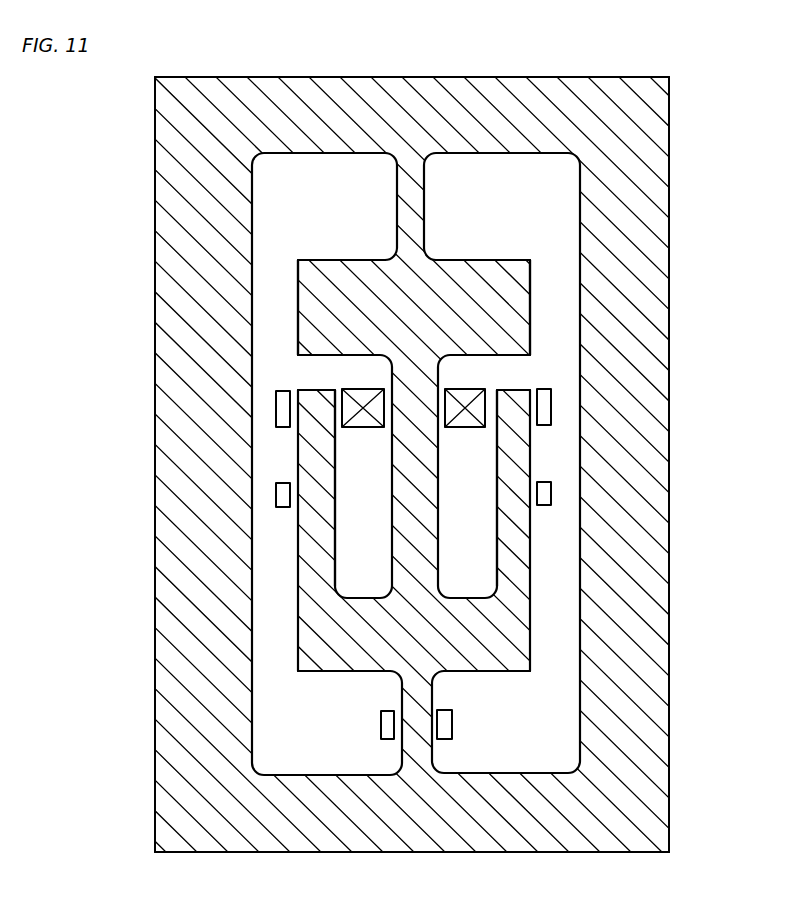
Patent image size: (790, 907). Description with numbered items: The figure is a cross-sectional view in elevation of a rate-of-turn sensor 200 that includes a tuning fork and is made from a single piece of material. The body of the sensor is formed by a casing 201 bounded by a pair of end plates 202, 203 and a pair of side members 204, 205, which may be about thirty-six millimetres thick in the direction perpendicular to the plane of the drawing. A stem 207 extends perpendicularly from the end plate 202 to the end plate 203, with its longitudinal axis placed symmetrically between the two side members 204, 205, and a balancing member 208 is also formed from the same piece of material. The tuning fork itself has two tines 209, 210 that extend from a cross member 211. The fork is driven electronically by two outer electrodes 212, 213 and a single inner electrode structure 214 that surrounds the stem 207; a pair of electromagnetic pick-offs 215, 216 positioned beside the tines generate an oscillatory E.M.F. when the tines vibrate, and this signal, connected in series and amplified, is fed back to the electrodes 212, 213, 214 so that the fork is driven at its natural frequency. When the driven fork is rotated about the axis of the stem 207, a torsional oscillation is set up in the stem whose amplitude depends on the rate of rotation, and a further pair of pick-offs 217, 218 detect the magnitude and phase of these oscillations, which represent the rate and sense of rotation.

The sensor 200 is at (702, 462).
The casing 201 is at (578, 813).
The end plate 202 is at (526, 90).
The end plate 203 is at (475, 840).
The side member 204 is at (655, 581).
The side member 205 is at (175, 587).
The stem 207 is at (423, 206).
The balancing member 208 is at (525, 277).
The tine 209 is at (515, 393).
The tine 210 is at (303, 391).
The cross member 211 is at (517, 654).
The outer electrode 212 is at (549, 427).
The outer electrode 213 is at (276, 411).
The inner electrode structure 214 is at (364, 428).
The electromagnetic pick-off 215 is at (550, 508).
The electromagnetic pick-off 216 is at (276, 493).
The pick-off 217 is at (452, 731).
The pick-off 218 is at (378, 725).